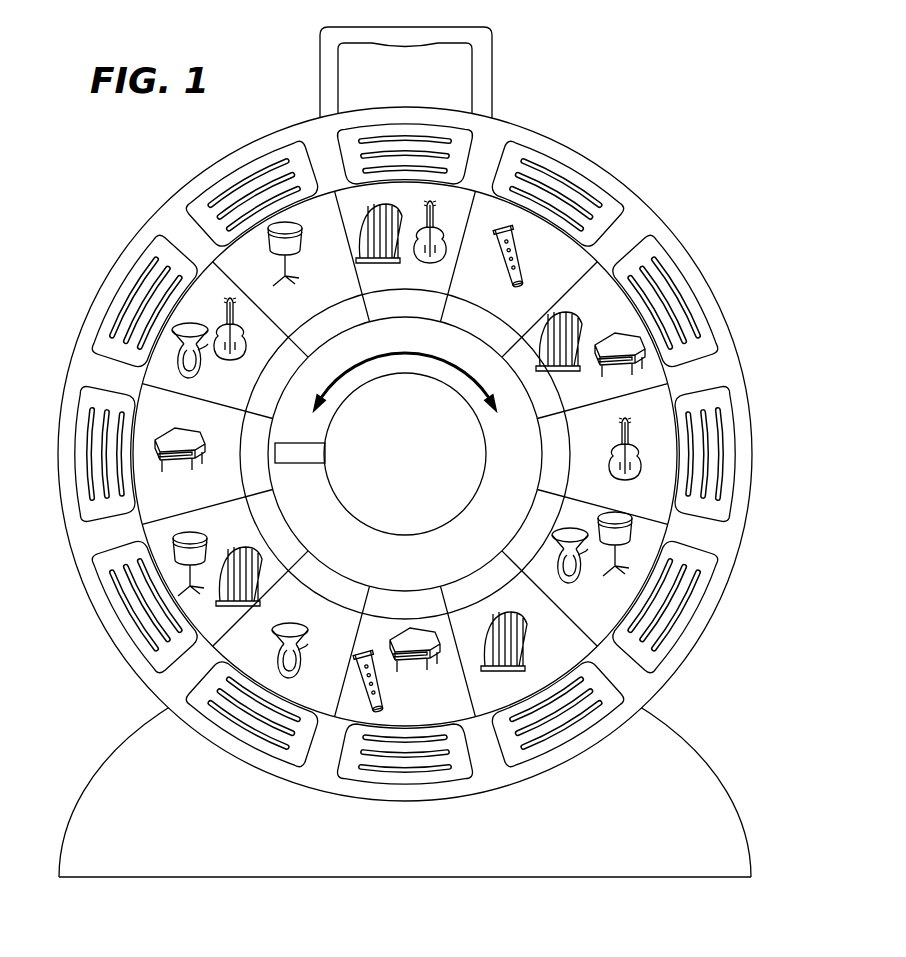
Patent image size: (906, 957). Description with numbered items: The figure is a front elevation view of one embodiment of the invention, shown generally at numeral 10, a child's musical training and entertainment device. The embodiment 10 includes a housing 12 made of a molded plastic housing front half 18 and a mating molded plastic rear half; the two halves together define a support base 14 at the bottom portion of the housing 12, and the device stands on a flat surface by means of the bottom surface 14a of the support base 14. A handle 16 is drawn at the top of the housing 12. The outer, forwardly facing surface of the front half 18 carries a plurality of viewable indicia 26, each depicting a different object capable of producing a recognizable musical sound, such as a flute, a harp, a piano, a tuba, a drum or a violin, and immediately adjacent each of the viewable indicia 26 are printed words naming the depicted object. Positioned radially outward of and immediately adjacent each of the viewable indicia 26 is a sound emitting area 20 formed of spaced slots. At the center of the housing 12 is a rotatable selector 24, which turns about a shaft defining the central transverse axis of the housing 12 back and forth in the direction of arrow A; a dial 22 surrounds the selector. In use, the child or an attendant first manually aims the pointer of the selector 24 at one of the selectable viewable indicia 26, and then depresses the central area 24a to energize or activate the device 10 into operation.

The embodiment of the invention 10 is at (588, 88).
The housing 12 is at (623, 178).
The support base 14 is at (705, 760).
The bottom surface 14a is at (508, 878).
The handle 16 is at (495, 42).
The housing front half 18 is at (638, 230).
The sound emitting area 20 is at (672, 296).
The rotatable dial 22 is at (343, 506).
The rotatable selector 24 is at (310, 443).
The central area 24a is at (389, 466).
The viewable indicia 26 is at (197, 300).